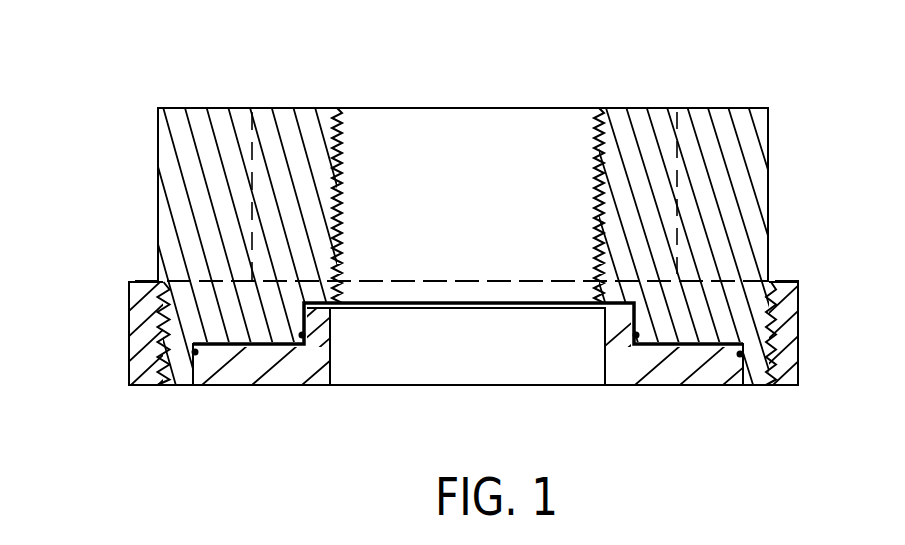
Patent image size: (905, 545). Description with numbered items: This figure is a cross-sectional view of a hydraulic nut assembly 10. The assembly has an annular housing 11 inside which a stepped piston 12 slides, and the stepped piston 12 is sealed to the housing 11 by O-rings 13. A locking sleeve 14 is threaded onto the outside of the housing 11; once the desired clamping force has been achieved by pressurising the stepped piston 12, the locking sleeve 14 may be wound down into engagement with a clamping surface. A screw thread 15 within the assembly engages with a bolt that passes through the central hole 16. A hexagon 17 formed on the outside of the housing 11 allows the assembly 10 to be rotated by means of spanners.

The hydraulic nut assembly 10 is at (299, 70).
The annular housing 11 is at (183, 115).
The stepped piston 12 is at (243, 370).
The O-rings 13 is at (300, 335).
The locking sleeve 14 is at (140, 282).
The screw thread 15 is at (337, 240).
The central hole 16 is at (494, 260).
The hexagon 17 is at (158, 178).